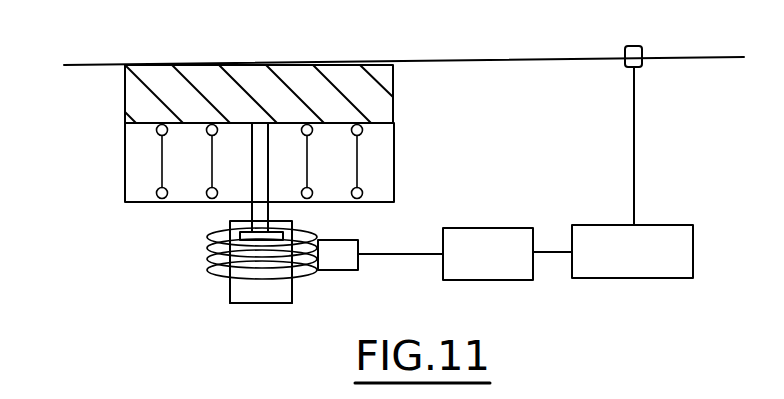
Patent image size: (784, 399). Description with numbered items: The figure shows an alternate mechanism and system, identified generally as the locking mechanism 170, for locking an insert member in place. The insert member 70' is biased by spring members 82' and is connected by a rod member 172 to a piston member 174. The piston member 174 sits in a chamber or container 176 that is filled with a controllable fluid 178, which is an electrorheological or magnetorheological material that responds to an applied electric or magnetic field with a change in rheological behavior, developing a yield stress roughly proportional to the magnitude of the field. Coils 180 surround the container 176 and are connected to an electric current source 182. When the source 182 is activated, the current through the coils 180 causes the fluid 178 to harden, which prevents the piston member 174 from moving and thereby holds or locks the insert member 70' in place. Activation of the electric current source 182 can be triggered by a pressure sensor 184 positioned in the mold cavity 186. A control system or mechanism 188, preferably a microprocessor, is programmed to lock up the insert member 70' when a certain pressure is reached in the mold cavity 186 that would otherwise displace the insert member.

The mold cavity 186 is at (97, 64).
The insert member 70' is at (259, 115).
The spring members 82' is at (260, 162).
The rod member 172 is at (253, 163).
The piston member 174 is at (245, 240).
The chamber or container 176 is at (272, 304).
The controllable fluid 178 is at (232, 297).
The coils 180 is at (308, 273).
The electric current source 182 is at (497, 235).
The pressure sensor 184 is at (643, 52).
The control system or mechanism 188 is at (678, 225).
The alternate locking mechanism 170 is at (87, 243).